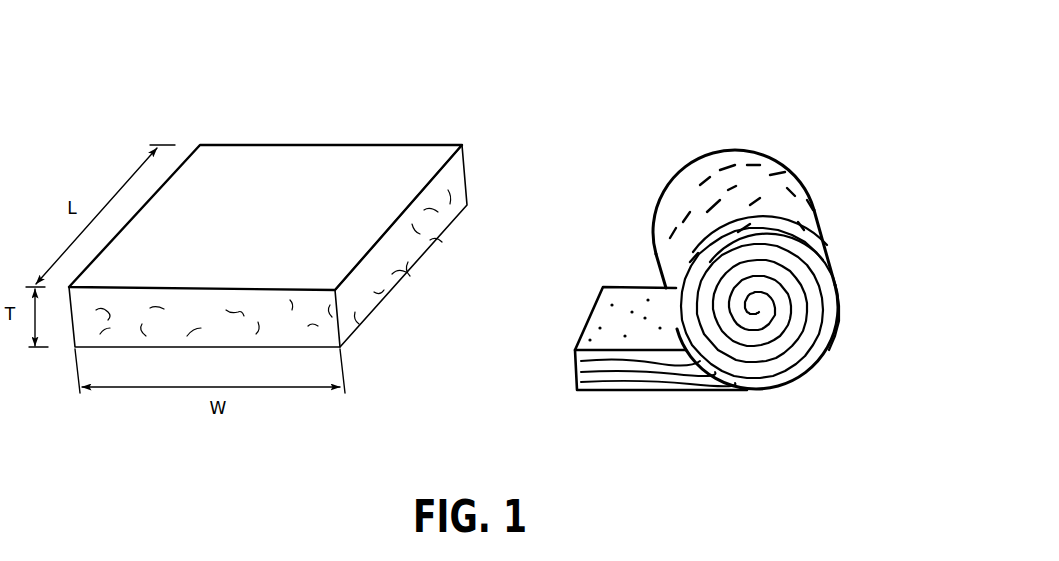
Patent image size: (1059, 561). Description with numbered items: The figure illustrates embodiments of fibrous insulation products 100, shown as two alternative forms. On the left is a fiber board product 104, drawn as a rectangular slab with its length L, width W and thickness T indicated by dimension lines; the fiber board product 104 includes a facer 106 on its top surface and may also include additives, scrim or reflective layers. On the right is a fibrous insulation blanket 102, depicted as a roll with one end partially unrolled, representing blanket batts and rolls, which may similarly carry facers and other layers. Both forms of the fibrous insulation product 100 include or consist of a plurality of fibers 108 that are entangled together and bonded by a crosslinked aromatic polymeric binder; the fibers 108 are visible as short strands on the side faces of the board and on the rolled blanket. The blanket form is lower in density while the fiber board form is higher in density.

The fibrous insulation product 100 is at (747, 253).
The fibrous insulation blanket 102 is at (688, 390).
The fiber board product 104 is at (441, 247).
The facer 106 is at (337, 167).
The fibers 108 is at (410, 252).